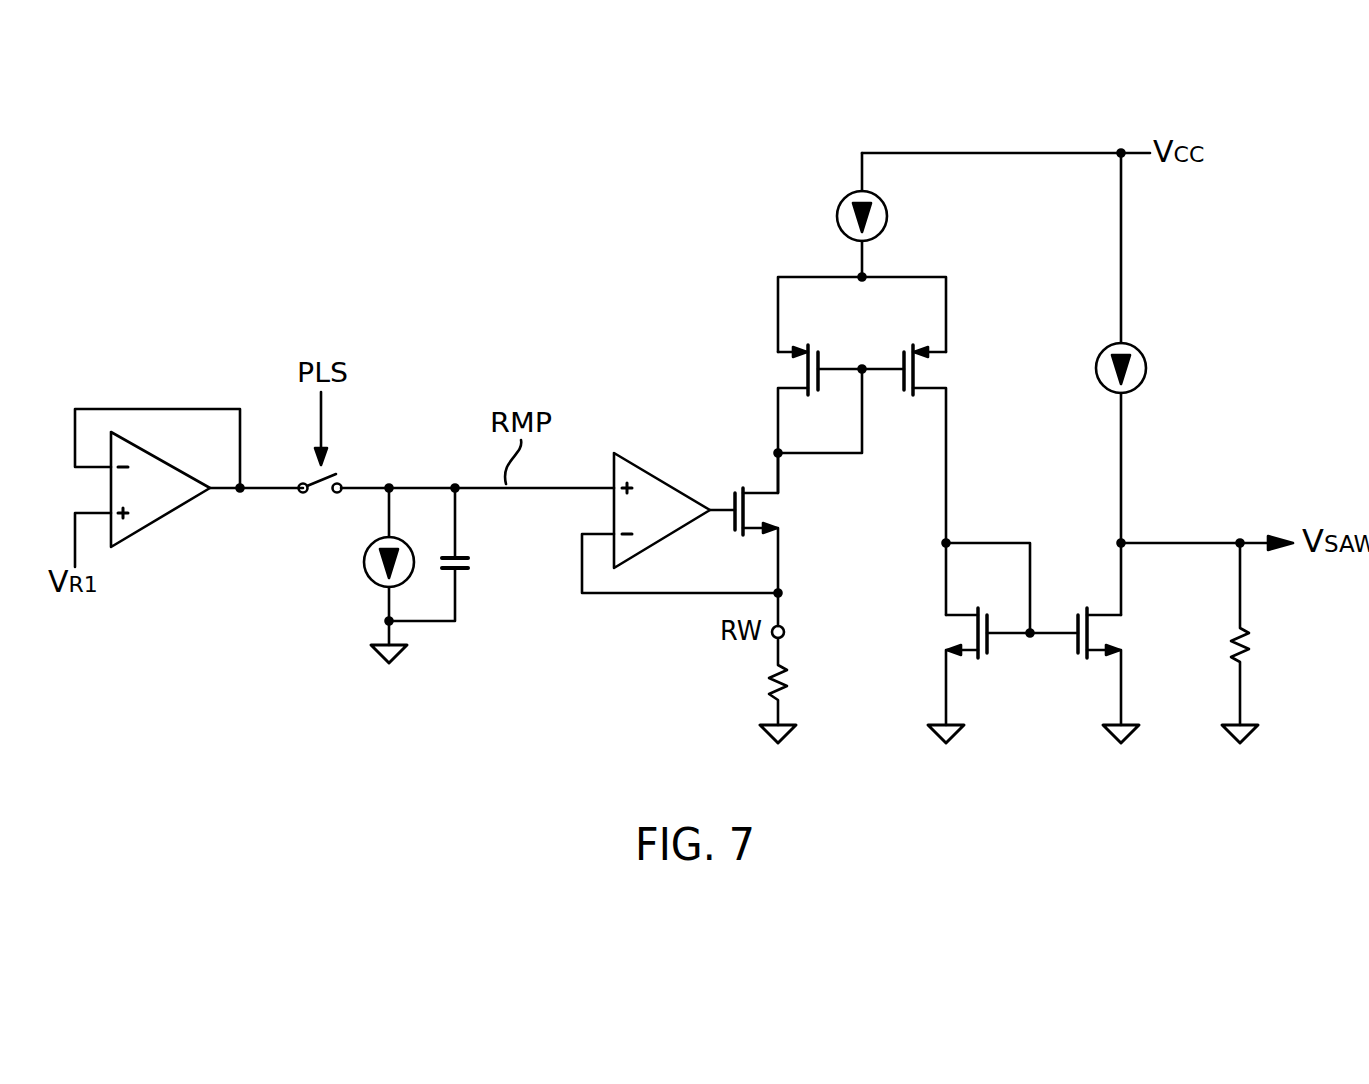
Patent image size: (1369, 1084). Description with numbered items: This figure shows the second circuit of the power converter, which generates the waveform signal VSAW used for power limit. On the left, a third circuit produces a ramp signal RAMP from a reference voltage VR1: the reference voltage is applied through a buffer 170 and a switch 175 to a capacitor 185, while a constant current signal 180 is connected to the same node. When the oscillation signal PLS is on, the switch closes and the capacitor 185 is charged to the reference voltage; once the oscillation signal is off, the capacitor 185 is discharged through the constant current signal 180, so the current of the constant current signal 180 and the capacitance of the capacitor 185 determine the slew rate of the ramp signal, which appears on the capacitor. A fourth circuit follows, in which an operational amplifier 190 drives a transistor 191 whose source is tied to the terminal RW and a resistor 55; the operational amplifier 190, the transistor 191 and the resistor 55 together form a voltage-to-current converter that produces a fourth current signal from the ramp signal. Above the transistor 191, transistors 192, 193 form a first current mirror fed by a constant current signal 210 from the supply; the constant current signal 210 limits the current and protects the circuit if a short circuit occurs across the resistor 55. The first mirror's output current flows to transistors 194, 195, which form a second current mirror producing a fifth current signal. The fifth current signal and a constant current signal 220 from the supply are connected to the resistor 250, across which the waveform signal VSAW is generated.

The buffer 170 is at (155, 530).
The switch 175 is at (318, 505).
The constant current signal 180 is at (375, 595).
The capacitor 185 is at (470, 562).
The operational amplifier 190 is at (665, 478).
The transistor 191 is at (783, 512).
The resistor 55 is at (792, 685).
The constant current signal 210 is at (888, 215).
The transistor 192 is at (775, 367).
The transistor 193 is at (948, 370).
The constant current signal 220 is at (1150, 370).
The transistor 194 is at (983, 660).
The transistor 195 is at (1120, 628).
The resistor 250 is at (1258, 645).